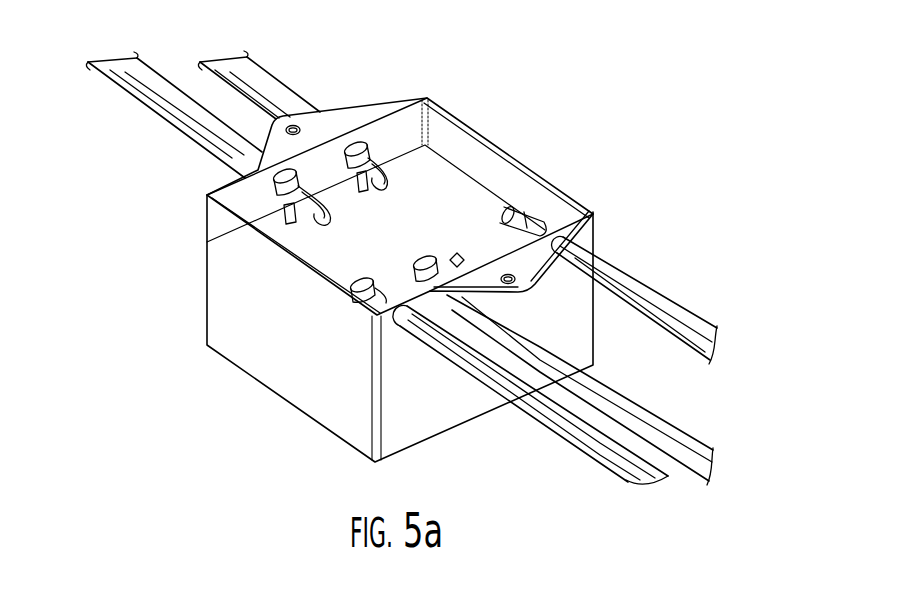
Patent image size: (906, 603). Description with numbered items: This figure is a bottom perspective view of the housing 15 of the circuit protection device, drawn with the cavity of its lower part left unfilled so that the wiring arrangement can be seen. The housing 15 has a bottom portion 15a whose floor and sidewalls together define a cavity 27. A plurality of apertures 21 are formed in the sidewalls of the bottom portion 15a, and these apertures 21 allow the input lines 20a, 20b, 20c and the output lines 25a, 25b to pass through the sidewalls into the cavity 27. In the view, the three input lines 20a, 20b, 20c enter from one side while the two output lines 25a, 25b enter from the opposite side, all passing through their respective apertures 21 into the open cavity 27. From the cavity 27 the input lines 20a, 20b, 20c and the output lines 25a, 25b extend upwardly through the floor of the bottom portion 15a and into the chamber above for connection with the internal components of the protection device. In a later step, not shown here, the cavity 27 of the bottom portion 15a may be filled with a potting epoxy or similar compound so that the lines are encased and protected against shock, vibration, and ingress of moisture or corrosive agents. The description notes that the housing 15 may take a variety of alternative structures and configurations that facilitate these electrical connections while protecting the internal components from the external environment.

The housing 15 is at (262, 355).
The bottom portion 15a is at (450, 105).
The apertures 21 is at (372, 142).
The cavity 27 is at (403, 236).
The output line 25a is at (236, 77).
The output line 25b is at (133, 62).
The input line 20a is at (690, 314).
The input line 20b is at (658, 468).
The input line 20c is at (640, 404).